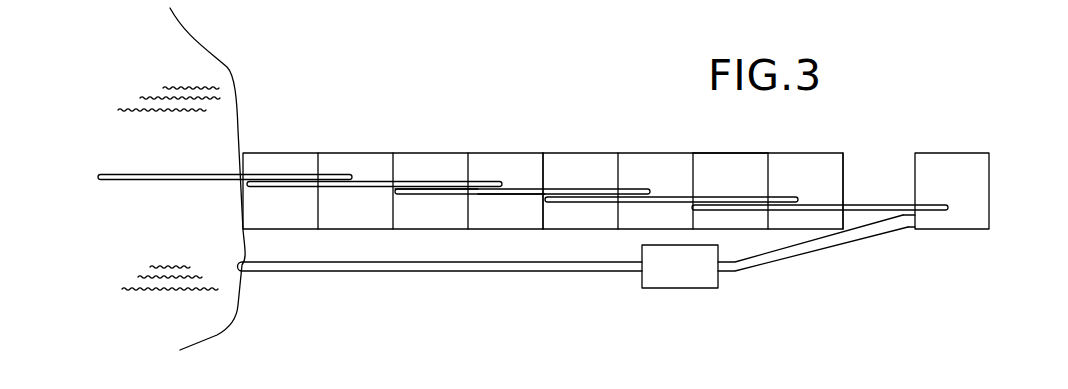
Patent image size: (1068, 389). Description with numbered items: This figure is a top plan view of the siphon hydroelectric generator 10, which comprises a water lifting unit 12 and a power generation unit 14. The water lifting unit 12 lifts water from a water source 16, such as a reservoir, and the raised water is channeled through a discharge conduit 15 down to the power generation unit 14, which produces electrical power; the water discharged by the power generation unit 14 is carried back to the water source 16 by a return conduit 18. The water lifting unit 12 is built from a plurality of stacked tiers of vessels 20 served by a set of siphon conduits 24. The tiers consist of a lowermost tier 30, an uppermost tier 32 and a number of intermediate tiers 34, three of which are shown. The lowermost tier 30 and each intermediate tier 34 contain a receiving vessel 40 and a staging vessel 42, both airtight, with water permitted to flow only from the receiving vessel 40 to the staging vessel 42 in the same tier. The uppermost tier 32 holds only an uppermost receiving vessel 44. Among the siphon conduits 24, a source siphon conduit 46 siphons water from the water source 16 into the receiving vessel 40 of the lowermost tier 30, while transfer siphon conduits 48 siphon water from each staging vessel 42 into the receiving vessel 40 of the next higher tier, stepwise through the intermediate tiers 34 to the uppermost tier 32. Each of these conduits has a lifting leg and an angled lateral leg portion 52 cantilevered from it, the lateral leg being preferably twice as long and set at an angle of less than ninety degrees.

The siphon hydroelectric generator 10 is at (940, 106).
The water lifting unit 12 is at (463, 113).
The power generation unit 14 is at (692, 292).
The discharge conduit 15 is at (826, 240).
The water source 16 is at (225, 310).
The return conduit 18 is at (542, 270).
The stacked tiers of vessels 20 is at (730, 152).
The siphon conduits 24 is at (375, 180).
The lowermost tier 30 is at (845, 149).
The uppermost tier 32 is at (994, 182).
The intermediate tiers 34 is at (570, 150).
The receiving vessel 40 is at (596, 212).
The staging vessel 42 is at (652, 166).
The uppermost receiving vessel 44 is at (973, 217).
The source siphon conduit 46 is at (153, 180).
The transfer siphon conduits 48 is at (478, 195).
The angled lateral leg portion 52 is at (510, 195).